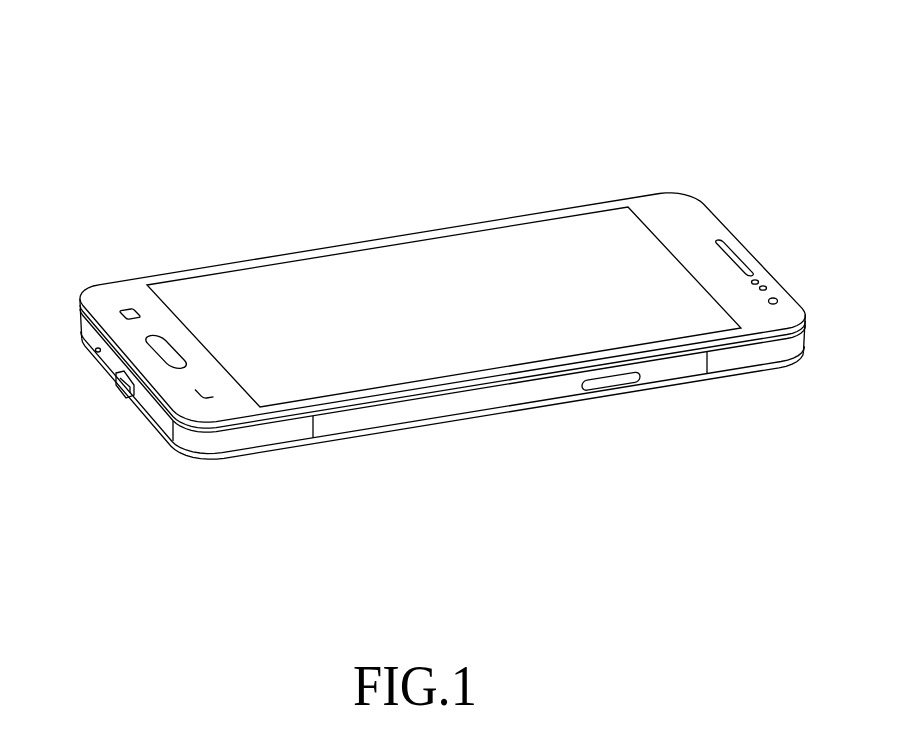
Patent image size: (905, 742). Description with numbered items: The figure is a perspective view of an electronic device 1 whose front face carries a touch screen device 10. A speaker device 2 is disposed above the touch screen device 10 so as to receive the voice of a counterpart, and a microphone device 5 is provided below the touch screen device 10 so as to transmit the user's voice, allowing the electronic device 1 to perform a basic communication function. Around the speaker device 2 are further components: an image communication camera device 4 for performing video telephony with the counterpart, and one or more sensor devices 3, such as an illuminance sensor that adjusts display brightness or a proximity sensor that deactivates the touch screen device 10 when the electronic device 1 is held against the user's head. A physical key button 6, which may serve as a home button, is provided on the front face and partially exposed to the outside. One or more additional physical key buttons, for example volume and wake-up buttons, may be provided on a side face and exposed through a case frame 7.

The electronic device 1 is at (463, 38).
The speaker device 2 is at (735, 258).
The sensor devices 3 is at (757, 282).
The image communication camera device 4 is at (773, 301).
The microphone device 5 is at (97, 351).
The physical key button 6 is at (166, 350).
The case frame 7 is at (672, 370).
The touch screen device 10 is at (402, 270).